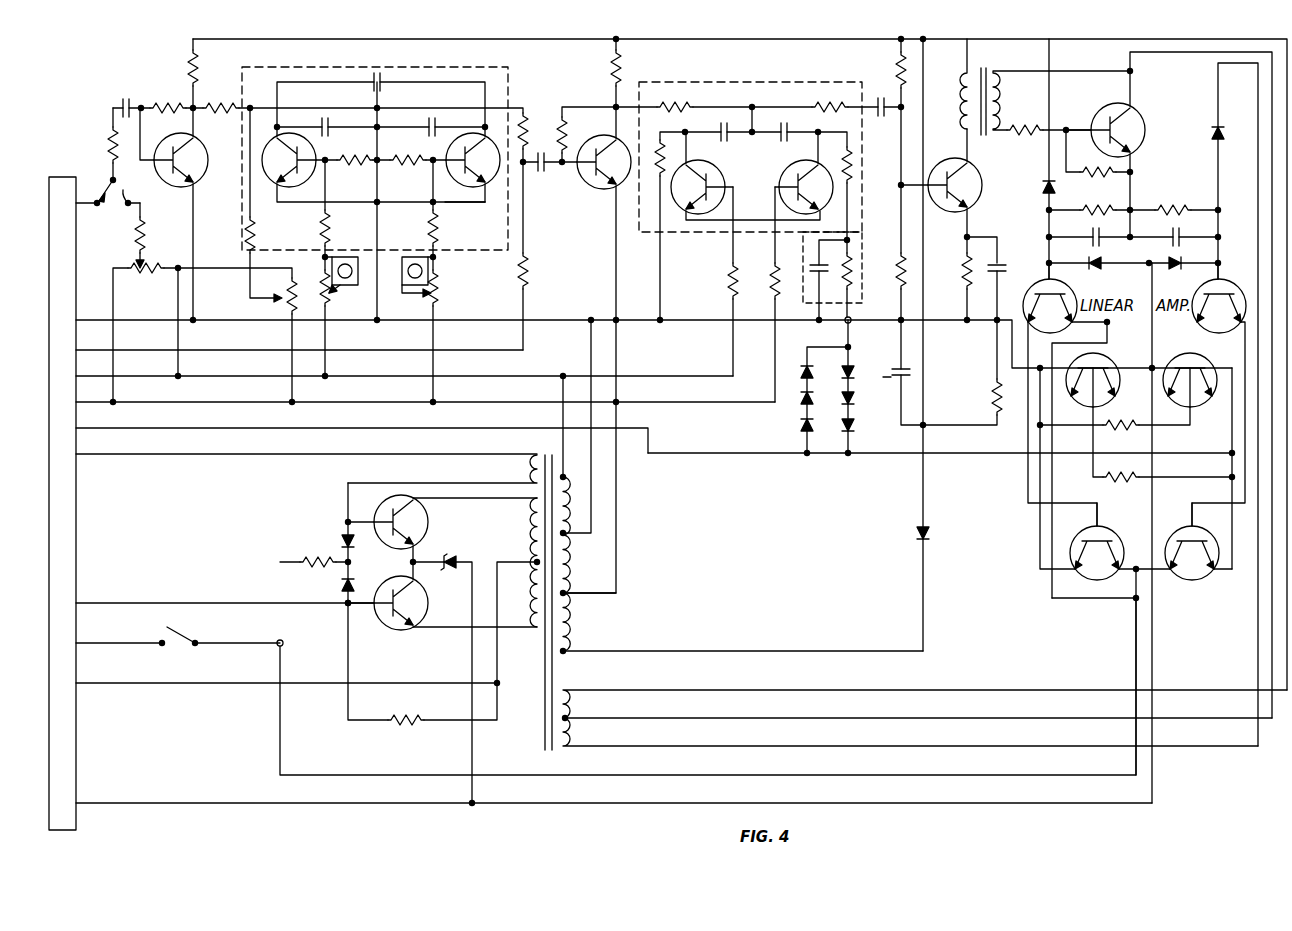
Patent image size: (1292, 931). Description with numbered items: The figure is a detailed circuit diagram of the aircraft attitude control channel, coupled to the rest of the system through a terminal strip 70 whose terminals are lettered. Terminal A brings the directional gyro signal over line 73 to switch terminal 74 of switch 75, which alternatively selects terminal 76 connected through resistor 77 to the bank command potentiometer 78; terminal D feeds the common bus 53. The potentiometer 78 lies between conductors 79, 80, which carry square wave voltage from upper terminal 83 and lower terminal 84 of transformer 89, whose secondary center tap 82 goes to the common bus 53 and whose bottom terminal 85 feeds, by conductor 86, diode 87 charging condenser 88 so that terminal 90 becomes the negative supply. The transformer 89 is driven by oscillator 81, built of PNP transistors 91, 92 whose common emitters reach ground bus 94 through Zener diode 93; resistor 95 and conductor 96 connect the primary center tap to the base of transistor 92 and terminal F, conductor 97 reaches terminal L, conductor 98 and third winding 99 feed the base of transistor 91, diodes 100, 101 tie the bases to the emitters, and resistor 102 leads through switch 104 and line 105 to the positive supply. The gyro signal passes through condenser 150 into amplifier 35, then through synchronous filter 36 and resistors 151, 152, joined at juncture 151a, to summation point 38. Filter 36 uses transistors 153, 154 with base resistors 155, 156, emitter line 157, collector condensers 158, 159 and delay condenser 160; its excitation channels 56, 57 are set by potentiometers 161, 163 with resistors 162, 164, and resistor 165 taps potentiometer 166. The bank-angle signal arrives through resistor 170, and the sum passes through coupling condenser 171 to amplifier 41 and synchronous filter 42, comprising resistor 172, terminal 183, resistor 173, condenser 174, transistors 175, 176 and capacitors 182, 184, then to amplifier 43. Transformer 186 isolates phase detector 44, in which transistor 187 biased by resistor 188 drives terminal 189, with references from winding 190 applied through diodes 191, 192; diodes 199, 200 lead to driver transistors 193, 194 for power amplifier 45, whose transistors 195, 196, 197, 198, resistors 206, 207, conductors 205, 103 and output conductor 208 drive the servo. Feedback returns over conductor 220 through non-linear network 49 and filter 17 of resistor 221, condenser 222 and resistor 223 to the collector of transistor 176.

The terminal strip 70 is at (52, 177).
The line 73 is at (88, 203).
The switch terminal 74 is at (108, 210).
The switch 75 is at (108, 188).
The terminal 76 is at (135, 191).
The resistor 77 is at (144, 226).
The potentiometer 78 is at (147, 265).
The common bus 53 is at (109, 320).
The conductor 79 is at (150, 375).
The conductor 80 is at (168, 401).
The conductor 98 is at (159, 455).
The conductor 97 is at (170, 603).
The conductor 96 is at (330, 683).
The ground bus 94 is at (179, 803).
The conductor 103 is at (307, 775).
The switch 104 is at (180, 633).
The line 105 is at (129, 642).
The condenser 150 is at (126, 99).
The resistor 151 is at (218, 99).
The juncture 151a is at (380, 107).
The amplifier 35 is at (195, 168).
The resistor 165 is at (246, 237).
The potentiometer 166 is at (284, 299).
The synchronous filter 36 is at (321, 68).
The condenser 160 is at (382, 75).
The condenser 158 is at (320, 118).
The condenser 159 is at (440, 118).
The transistor 153 is at (291, 168).
The transistor 154 is at (493, 168).
The resistor 155 is at (346, 150).
The resistor 156 is at (411, 150).
The input excitation channel 56 is at (327, 179).
The input excitation channel 57 is at (432, 182).
The resistor 162 is at (320, 235).
The resistor 164 is at (428, 235).
The line 157 is at (471, 203).
The potentiometer 161 is at (331, 298).
The potentiometer 163 is at (440, 295).
The resistor 152 is at (528, 125).
The summation point 38 is at (542, 172).
The coupling condenser 171 is at (548, 172).
The resistor 170 is at (526, 273).
The amplifier 41 is at (618, 170).
The synchronous filter 42 is at (736, 80).
The resistor 172 is at (678, 109).
The terminal 183 is at (752, 107).
The resistor 173 is at (819, 108).
The condenser 174 is at (879, 96).
The capacitor 182 is at (721, 138).
The condenser 184 is at (781, 138).
The transistor 175 is at (700, 195).
The transistor 176 is at (826, 195).
The resistor 223 is at (854, 168).
The resistor 221 is at (852, 283).
The filter 17 is at (802, 248).
The condenser 222 is at (802, 327).
The conductor 220 is at (850, 345).
The non-linear network 49 is at (830, 394).
The condenser 88 is at (894, 380).
The terminal 90 is at (925, 424).
The diode 87 is at (929, 533).
The amplifier 43 is at (969, 193).
The transformer 186 is at (976, 74).
The diode 191 is at (1041, 184).
The transistor 187 is at (1138, 138).
The resistor 188 is at (1100, 178).
The terminal 189 is at (1133, 209).
The diode 199 is at (1097, 270).
The diode 200 is at (1173, 270).
The diode 192 is at (1212, 133).
The phase detector 44 is at (1188, 163).
The transistor 193 is at (1039, 319).
The transistor 194 is at (1208, 319).
The transistor 195 is at (1082, 393).
The transistor 196 is at (1179, 393).
The transistor 197 is at (1086, 566).
The transistor 198 is at (1181, 566).
The resistor 206 is at (1115, 428).
The resistor 207 is at (1119, 479).
The conductor 208 is at (1208, 454).
The conductor 205 is at (1114, 602).
The power amplifier 45 is at (1140, 353).
The transformer 89 is at (539, 450).
The third winding 99 is at (524, 458).
The oscillator 81 is at (503, 527).
The upper terminal 83 is at (564, 485).
The secondary center tap 82 is at (573, 535).
The lower terminal 84 is at (569, 598).
The bottom terminal 85 is at (568, 650).
The conductor 86 is at (668, 651).
The winding 190 is at (572, 710).
The transistor 91 is at (426, 522).
The transistor 92 is at (426, 603).
The Zener diode 93 is at (456, 560).
The diode 100 is at (342, 540).
The diode 101 is at (340, 597).
The resistor 102 is at (303, 561).
The resistor 95 is at (406, 718).